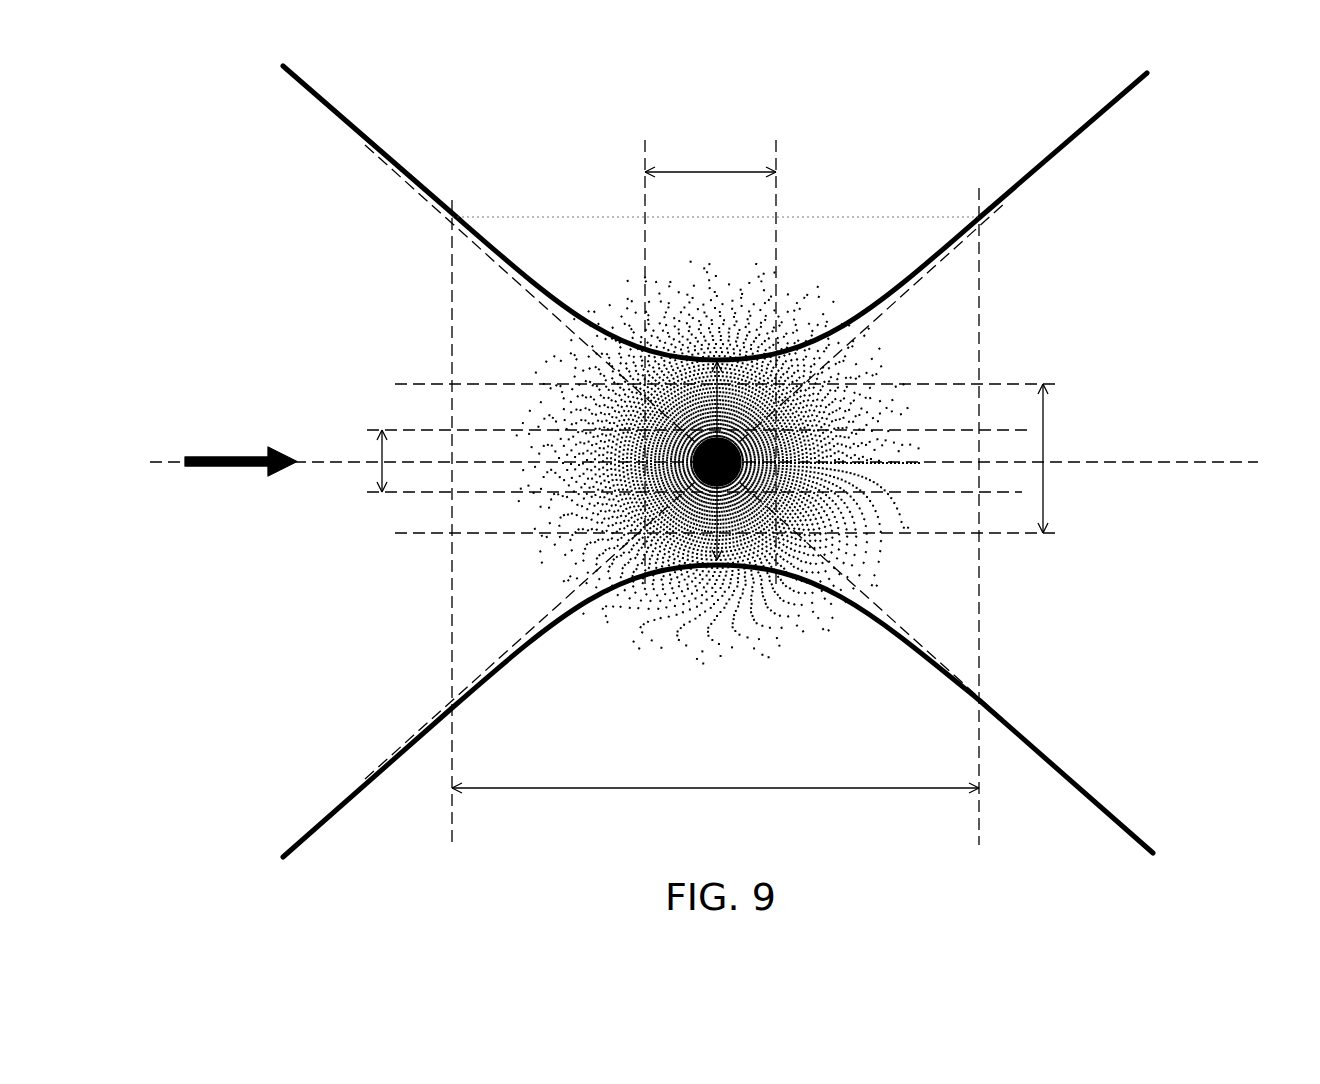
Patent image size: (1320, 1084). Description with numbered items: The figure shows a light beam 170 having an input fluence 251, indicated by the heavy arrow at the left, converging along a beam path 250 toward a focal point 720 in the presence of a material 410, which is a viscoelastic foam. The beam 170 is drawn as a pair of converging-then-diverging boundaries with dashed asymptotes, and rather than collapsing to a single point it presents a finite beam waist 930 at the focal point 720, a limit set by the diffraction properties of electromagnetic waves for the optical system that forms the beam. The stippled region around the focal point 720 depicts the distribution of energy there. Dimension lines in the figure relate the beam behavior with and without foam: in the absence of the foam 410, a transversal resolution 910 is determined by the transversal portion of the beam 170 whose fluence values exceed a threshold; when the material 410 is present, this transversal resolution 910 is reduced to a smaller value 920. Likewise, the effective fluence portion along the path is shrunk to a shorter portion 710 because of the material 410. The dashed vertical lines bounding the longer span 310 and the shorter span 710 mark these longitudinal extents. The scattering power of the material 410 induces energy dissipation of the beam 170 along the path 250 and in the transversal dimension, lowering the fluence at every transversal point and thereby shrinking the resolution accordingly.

The light beam 170 is at (341, 274).
The beam path 250 is at (1165, 467).
The fluence 251 is at (248, 456).
The focal region length 310 is at (715, 516).
The material 410 is at (892, 674).
The portion 710 is at (680, 171).
The focal point 720 is at (712, 470).
The transversal resolution 910 is at (1043, 478).
The reduced transversal resolution value 920 is at (380, 463).
The beam waist 930 is at (718, 404).